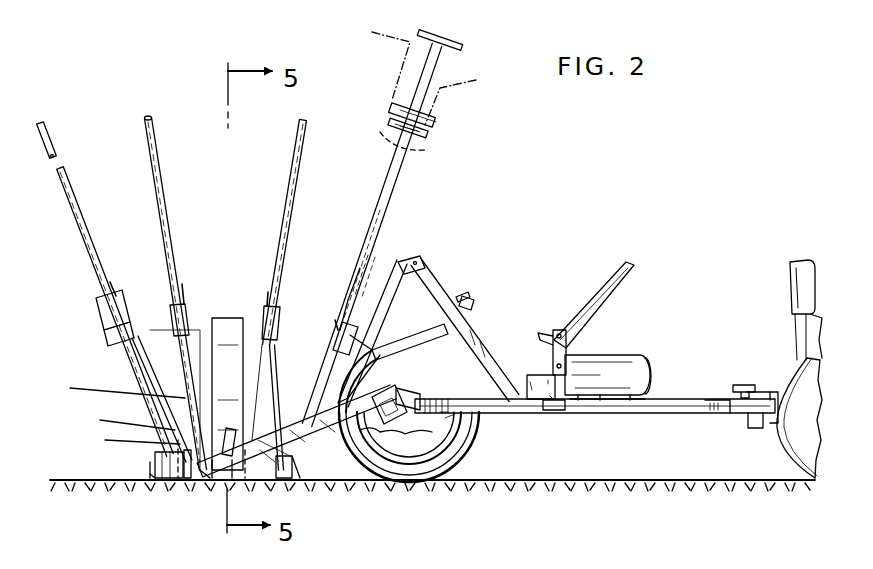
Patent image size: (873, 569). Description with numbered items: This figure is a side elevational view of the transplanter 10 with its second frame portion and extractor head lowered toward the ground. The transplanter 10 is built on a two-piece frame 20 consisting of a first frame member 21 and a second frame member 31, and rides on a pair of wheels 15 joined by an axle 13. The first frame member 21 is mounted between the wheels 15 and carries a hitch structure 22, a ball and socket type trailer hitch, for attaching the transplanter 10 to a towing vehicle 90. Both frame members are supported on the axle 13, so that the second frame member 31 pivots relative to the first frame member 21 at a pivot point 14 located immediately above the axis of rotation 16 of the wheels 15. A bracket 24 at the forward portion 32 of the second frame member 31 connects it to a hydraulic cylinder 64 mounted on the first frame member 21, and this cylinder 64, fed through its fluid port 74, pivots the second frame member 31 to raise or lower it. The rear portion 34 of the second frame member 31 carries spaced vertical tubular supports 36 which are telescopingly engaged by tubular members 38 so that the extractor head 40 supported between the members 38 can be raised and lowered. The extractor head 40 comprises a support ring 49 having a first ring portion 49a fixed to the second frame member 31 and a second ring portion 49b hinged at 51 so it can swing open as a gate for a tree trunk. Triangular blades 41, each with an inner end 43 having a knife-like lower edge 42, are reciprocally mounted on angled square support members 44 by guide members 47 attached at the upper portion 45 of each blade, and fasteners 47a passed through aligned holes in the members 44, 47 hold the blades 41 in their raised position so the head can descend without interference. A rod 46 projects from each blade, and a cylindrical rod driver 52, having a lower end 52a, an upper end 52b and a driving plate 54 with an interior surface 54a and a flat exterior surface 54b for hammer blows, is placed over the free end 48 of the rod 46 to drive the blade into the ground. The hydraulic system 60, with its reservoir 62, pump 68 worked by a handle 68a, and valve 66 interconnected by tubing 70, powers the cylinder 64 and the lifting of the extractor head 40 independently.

The transplanter 10 is at (515, 198).
The axle 13 is at (393, 399).
The pivot point 14 is at (416, 391).
The wheels 15 is at (468, 413).
The axis of rotation 16 is at (388, 411).
The frame 20 is at (660, 414).
The first frame member 21 is at (615, 414).
The hitch structure 22 is at (748, 383).
The bracket 24 is at (406, 258).
The second frame member 31 is at (333, 435).
The forward portion of second frame member 32 is at (368, 350).
The rear portion of second frame member 34 is at (235, 482).
The tubular supports 36 is at (205, 482).
The tubular members 38 is at (224, 330).
The extractor head 40 is at (150, 460).
The blades 41 is at (146, 352).
The lower edge 42 is at (175, 485).
The inner end 43 is at (150, 445).
The support members 44 is at (125, 383).
The upper portion of blade 45 is at (116, 282).
The rod 46 is at (153, 196).
The guide members 47 is at (112, 298).
The fasteners 47a is at (104, 330).
The free end of rod 48 is at (148, 115).
The support ring 49 is at (284, 480).
The first ring portion 49a is at (300, 480).
The second ring portion 49b is at (152, 479).
The hinge 51 is at (186, 479).
The rod driver 52 is at (430, 197).
The lower end of rod driver 52a is at (354, 262).
The upper end of rod driver 52b is at (392, 122).
The driving plate 54 is at (462, 40).
The interior surface 54a is at (425, 150).
The exterior surface 54b is at (432, 123).
The hydraulic system 60 is at (612, 348).
The reservoir 62 is at (645, 362).
The hydraulic cylinder 64 is at (480, 336).
The valve 66 is at (540, 374).
The pump 68 is at (568, 352).
The handle 68a is at (608, 286).
The tubing 70 is at (232, 428).
The fluid port 74 is at (466, 296).
The towing vehicle 90 is at (792, 340).